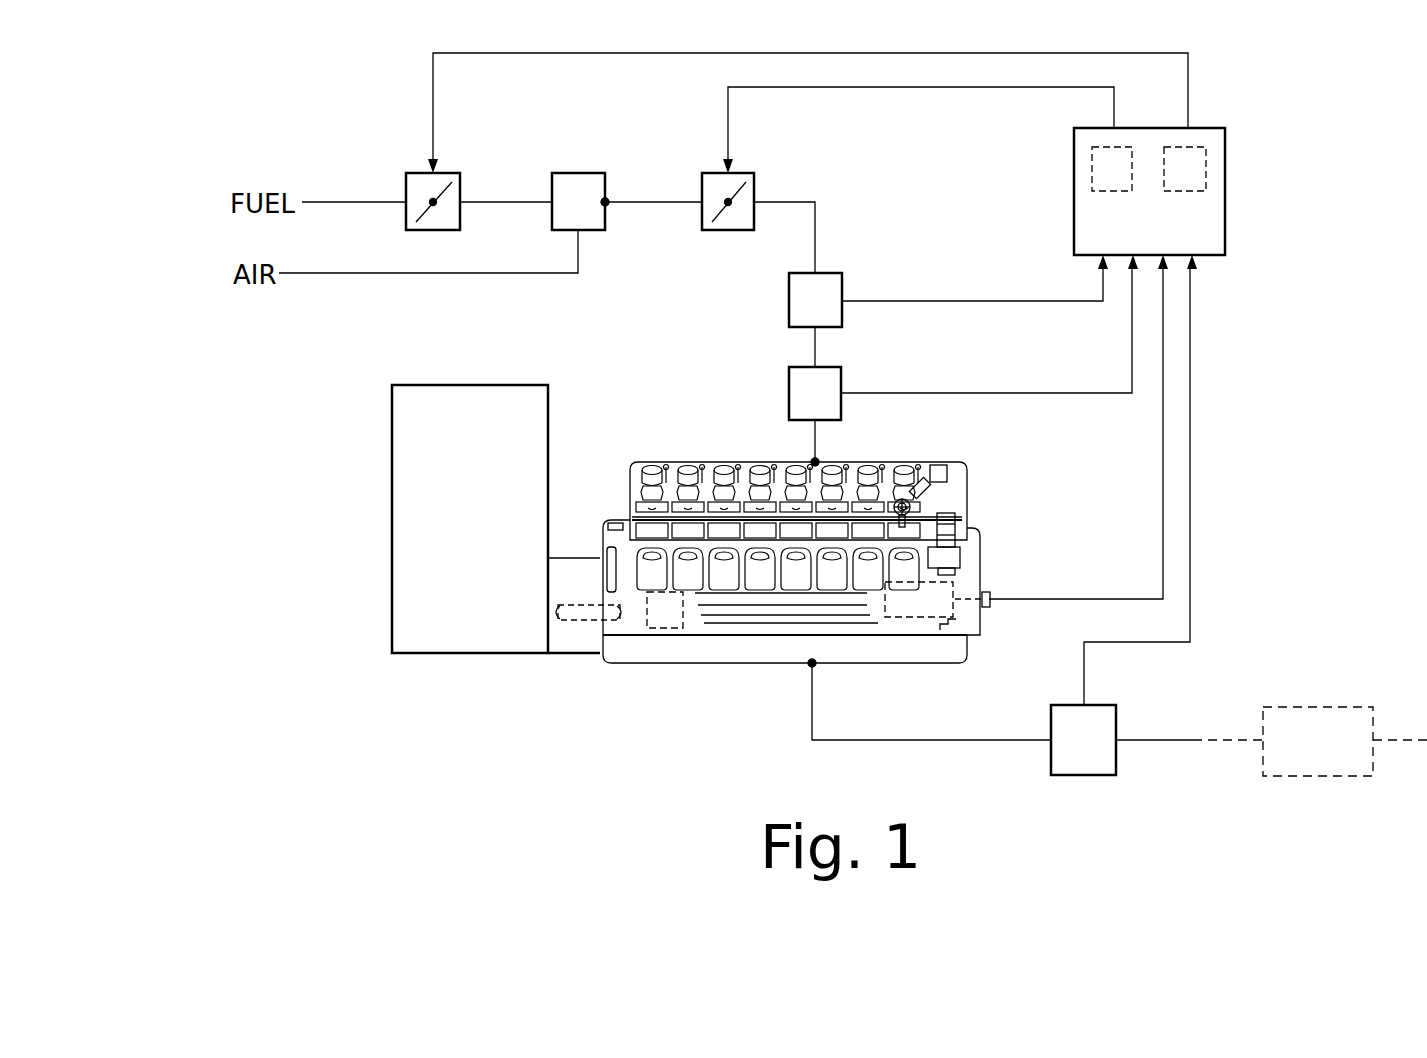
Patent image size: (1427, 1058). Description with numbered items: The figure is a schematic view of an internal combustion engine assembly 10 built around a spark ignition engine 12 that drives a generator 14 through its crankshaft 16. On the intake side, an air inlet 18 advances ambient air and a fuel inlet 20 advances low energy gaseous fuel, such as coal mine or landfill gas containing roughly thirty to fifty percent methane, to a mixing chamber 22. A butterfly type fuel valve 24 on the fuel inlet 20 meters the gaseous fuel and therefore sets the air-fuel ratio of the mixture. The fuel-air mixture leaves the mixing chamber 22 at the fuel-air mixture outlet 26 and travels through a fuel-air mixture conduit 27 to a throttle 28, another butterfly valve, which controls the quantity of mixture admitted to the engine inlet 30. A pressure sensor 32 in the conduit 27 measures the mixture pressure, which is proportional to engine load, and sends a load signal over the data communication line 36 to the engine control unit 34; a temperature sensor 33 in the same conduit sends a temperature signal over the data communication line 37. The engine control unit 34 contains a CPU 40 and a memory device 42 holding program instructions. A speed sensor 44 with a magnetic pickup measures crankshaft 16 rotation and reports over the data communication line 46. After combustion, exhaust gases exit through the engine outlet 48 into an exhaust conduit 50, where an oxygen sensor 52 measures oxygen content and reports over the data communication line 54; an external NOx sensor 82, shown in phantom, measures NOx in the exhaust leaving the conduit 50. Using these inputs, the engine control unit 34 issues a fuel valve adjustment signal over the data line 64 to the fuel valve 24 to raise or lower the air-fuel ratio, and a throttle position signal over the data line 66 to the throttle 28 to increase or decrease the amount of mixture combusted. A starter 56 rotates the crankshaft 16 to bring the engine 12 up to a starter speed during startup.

The internal combustion engine assembly 10 is at (210, 123).
The internal combustion engine 12 is at (746, 675).
The generator 14 is at (425, 640).
The crankshaft 16 is at (578, 635).
The air inlet 18 is at (360, 273).
The fuel inlet 20 is at (362, 202).
The mixing chamber 22 is at (592, 233).
The fuel valve 24 is at (462, 217).
The fuel-air mixture outlet 26 is at (608, 197).
The fuel-air mixture conduit 27 is at (665, 202).
The throttle 28 is at (756, 187).
The engine inlet 30 is at (818, 460).
The pressure sensor 32 is at (844, 280).
The temperature sensor 33 is at (843, 372).
The engine control unit 34 is at (1205, 128).
The data communication line 36 is at (960, 301).
The data communication line 37 is at (1132, 350).
The CPU 40 is at (1206, 166).
The memory device 42 is at (1085, 170).
The speed sensor 44 is at (955, 610).
The data communication line 46 is at (1163, 470).
The engine outlet 48 is at (812, 663).
The exhaust conduit 50 is at (850, 740).
The oxygen sensor 52 is at (1070, 775).
The data communication line 54 is at (1192, 470).
The starter 56 is at (667, 630).
The data line 64 is at (553, 53).
The data line 66 is at (905, 87).
The NOx sensor 82 is at (1320, 707).